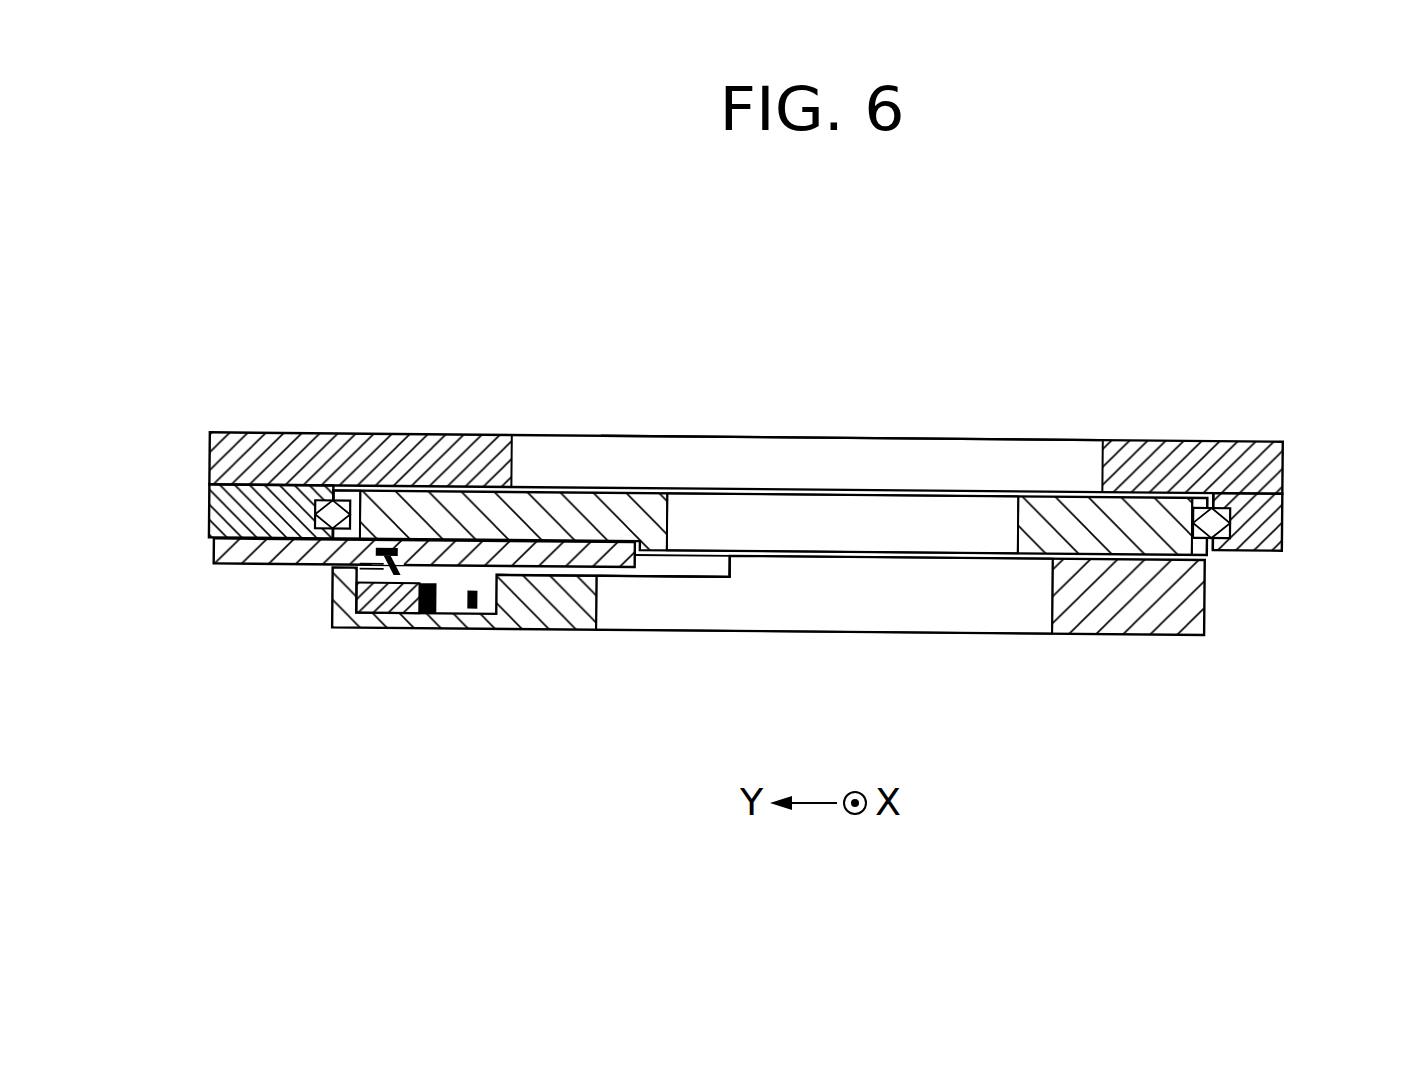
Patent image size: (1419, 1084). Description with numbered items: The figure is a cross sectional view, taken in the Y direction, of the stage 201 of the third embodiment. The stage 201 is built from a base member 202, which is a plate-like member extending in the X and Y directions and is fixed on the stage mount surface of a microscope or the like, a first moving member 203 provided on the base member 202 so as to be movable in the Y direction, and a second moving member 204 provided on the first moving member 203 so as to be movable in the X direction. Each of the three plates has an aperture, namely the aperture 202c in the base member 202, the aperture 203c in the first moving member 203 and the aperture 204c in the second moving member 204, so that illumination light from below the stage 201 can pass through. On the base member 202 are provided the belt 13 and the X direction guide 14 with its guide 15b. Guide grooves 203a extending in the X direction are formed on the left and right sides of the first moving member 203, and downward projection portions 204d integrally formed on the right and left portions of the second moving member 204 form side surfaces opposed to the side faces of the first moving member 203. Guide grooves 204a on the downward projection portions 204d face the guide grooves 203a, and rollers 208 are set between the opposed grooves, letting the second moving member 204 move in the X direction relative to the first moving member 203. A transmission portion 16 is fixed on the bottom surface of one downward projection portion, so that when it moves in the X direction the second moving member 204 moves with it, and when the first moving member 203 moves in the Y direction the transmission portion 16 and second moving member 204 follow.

The stage 201 is at (333, 296).
The belt 13 is at (472, 613).
The X direction guide 14 is at (385, 614).
The guide 15b is at (345, 582).
The transmission portion 16 is at (228, 568).
The base member 202 is at (1115, 620).
The aperture 202c is at (862, 620).
The first moving member 203 is at (1060, 510).
The guide groove 203a is at (372, 492).
The aperture 203c is at (752, 510).
The second moving member 204 is at (1252, 455).
The guide groove 204a is at (273, 480).
The aperture 204c is at (882, 457).
The downward projection portion 204d is at (212, 518).
The roller 208 is at (335, 500).